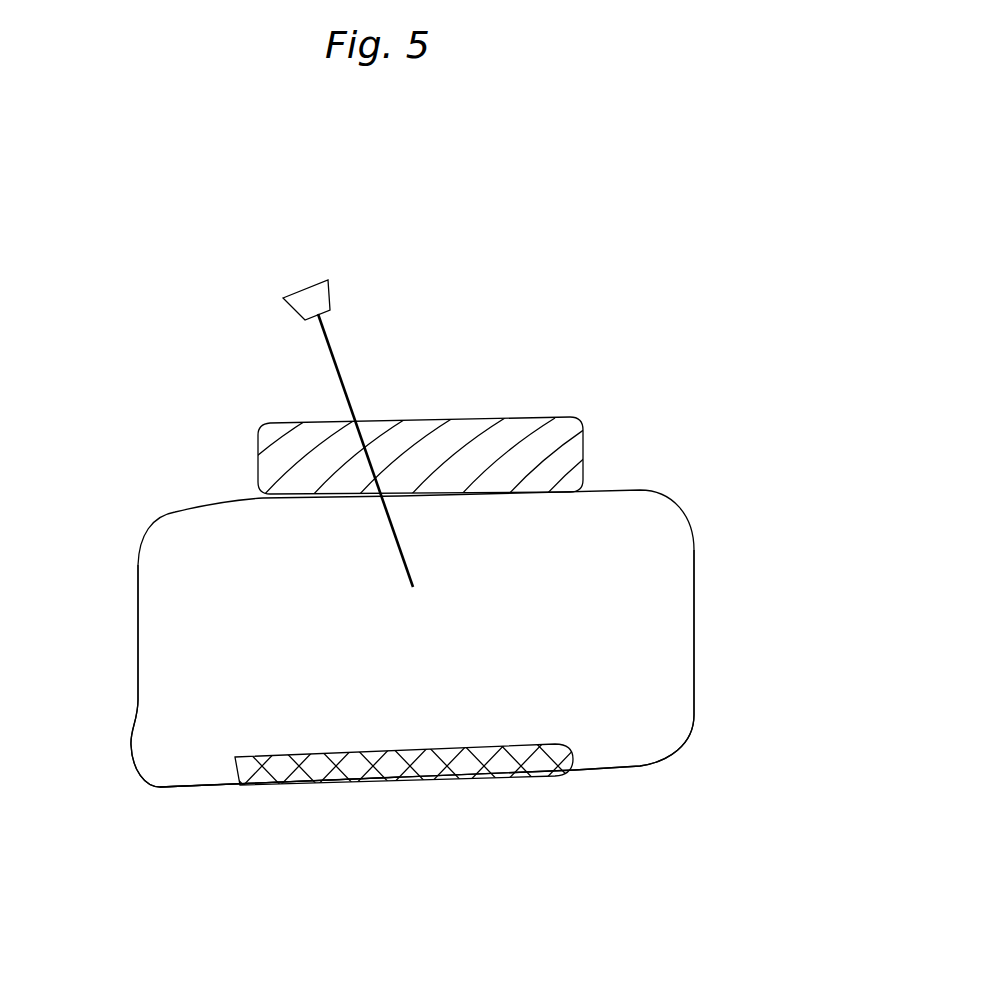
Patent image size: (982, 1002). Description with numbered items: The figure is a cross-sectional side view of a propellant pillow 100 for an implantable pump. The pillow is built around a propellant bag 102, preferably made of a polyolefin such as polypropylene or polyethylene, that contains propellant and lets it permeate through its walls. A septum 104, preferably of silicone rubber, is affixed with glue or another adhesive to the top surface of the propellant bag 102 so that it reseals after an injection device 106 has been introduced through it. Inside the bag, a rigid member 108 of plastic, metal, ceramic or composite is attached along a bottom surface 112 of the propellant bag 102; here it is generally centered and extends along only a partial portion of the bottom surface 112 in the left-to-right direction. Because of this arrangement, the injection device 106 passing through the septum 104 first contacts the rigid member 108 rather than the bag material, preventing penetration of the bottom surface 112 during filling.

The propellant pillow 100 is at (700, 441).
The propellant bag 102 is at (171, 514).
The septum 104 is at (469, 437).
The injection device 106 is at (333, 342).
The rigid member 108 is at (447, 773).
The bottom surface 112 is at (193, 790).